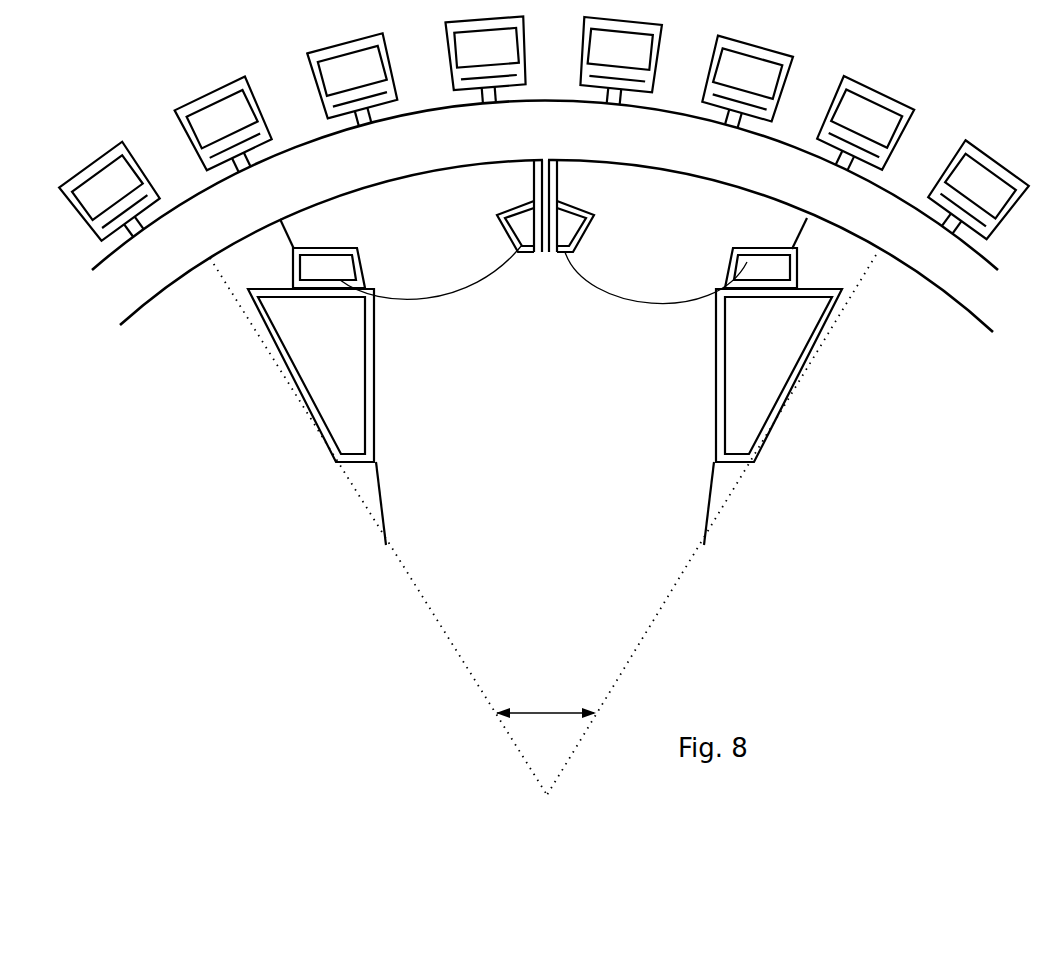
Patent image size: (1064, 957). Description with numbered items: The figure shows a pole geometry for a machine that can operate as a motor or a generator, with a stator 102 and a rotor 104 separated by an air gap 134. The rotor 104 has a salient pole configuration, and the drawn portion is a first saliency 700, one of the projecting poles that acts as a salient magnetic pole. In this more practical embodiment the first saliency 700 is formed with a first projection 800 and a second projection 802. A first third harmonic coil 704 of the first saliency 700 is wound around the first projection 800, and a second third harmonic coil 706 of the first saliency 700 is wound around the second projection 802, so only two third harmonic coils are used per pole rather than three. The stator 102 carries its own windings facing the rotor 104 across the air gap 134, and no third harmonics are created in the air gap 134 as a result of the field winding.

The stator 102 is at (186, 186).
The rotor 104 is at (962, 318).
The air gap 134 is at (135, 277).
The first saliency 700 is at (561, 493).
The first third harmonic coil 704 is at (443, 296).
The second third harmonic coil 706 is at (628, 298).
The first projection 800 is at (431, 221).
The second projection 802 is at (698, 221).